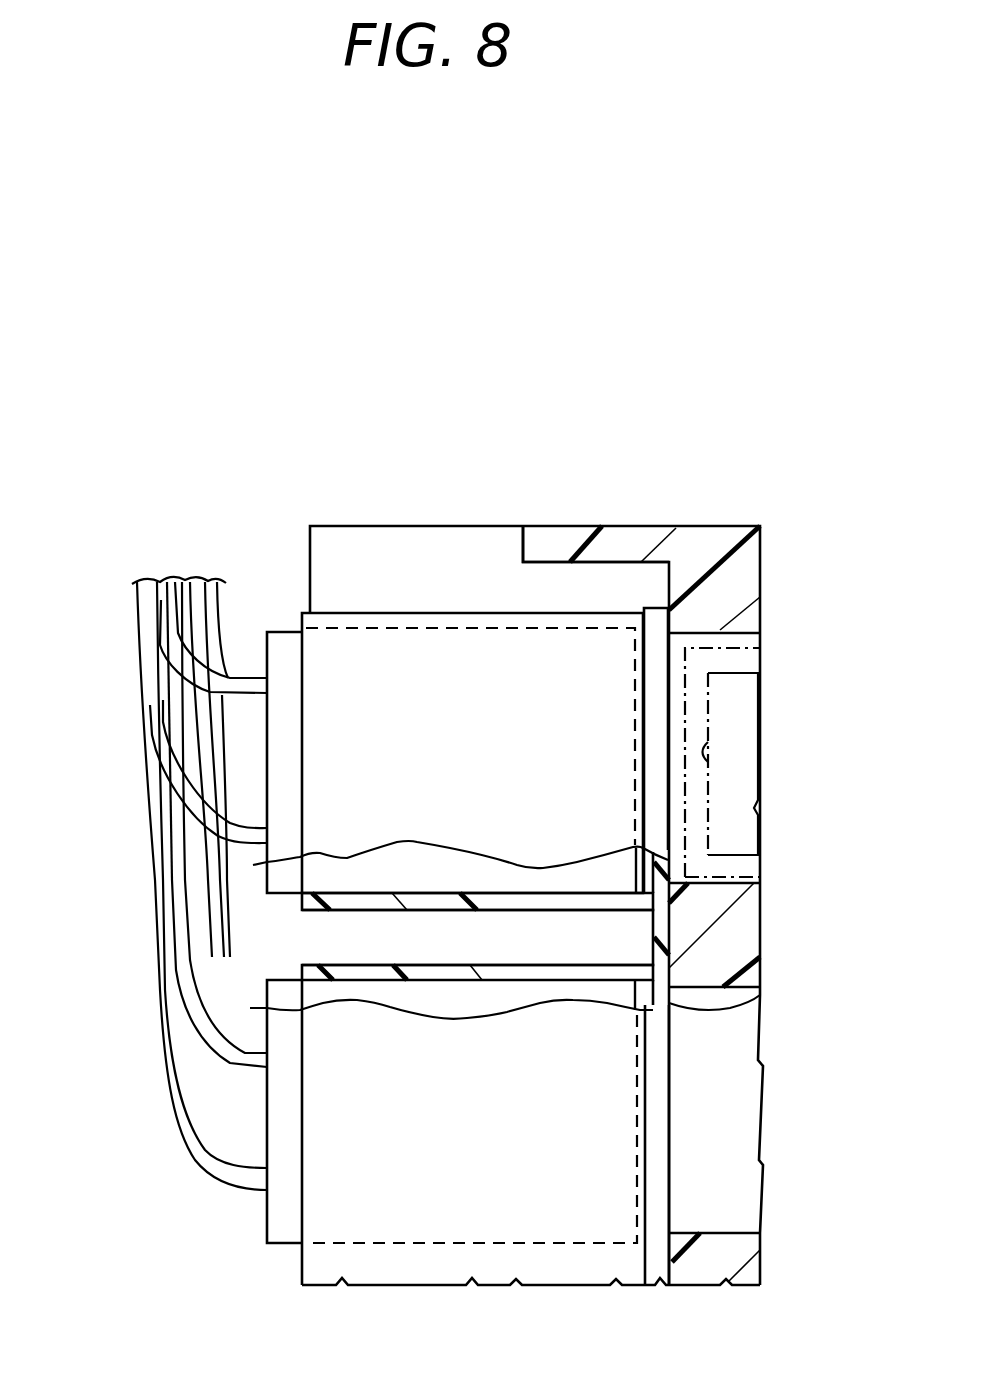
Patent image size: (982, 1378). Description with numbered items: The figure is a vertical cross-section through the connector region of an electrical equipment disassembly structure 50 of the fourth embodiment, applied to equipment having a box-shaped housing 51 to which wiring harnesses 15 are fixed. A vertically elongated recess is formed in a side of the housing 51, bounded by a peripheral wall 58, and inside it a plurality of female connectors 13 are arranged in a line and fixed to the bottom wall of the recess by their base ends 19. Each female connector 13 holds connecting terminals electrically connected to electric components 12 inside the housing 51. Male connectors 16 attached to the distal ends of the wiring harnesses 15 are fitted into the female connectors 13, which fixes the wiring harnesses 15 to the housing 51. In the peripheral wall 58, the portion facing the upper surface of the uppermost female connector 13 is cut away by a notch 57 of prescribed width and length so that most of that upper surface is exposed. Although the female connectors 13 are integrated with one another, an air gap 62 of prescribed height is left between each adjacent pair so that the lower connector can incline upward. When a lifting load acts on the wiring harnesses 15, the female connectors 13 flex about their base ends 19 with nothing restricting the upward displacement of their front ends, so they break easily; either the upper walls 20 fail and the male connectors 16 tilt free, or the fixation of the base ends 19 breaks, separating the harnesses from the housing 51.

The electrical equipment disassembly structure 50 is at (678, 359).
The housing 51 is at (730, 524).
The notch 57 is at (520, 549).
The peripheral wall 58 is at (636, 540).
The upper wall 20 is at (452, 613).
The air gap 62 is at (510, 925).
The female connector 13 is at (312, 901).
The base end 19 is at (655, 626).
The electric component 12 is at (712, 750).
The male connector 16 is at (280, 632).
The wiring harness 15 is at (167, 619).